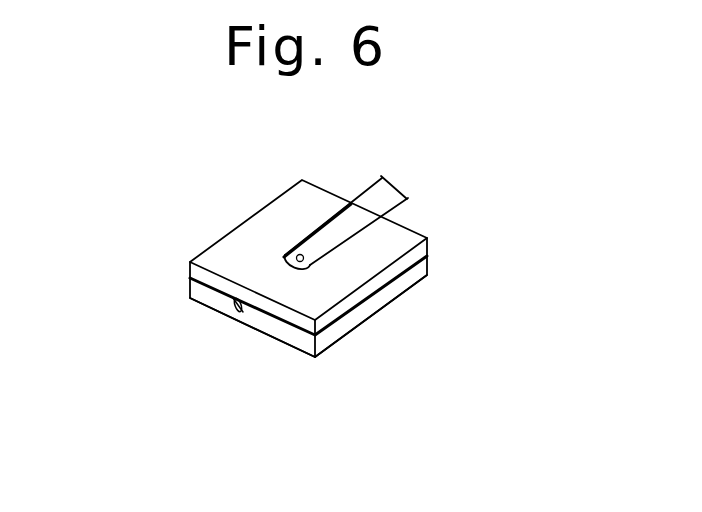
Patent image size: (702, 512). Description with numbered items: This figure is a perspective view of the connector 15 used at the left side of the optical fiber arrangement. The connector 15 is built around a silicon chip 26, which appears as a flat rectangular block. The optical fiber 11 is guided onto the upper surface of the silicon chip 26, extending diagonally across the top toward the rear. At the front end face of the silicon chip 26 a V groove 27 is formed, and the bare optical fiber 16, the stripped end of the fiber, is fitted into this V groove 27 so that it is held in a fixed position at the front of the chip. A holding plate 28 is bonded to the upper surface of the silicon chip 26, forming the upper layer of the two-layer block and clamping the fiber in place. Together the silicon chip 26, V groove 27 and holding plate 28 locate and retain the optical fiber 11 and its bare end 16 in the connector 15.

The connector 15 is at (245, 213).
The holding plate 28 is at (215, 257).
The silicon chip 26 is at (392, 293).
The optical fiber 11 is at (370, 205).
The bare optical fiber 16 is at (238, 308).
The V groove 27 is at (242, 308).